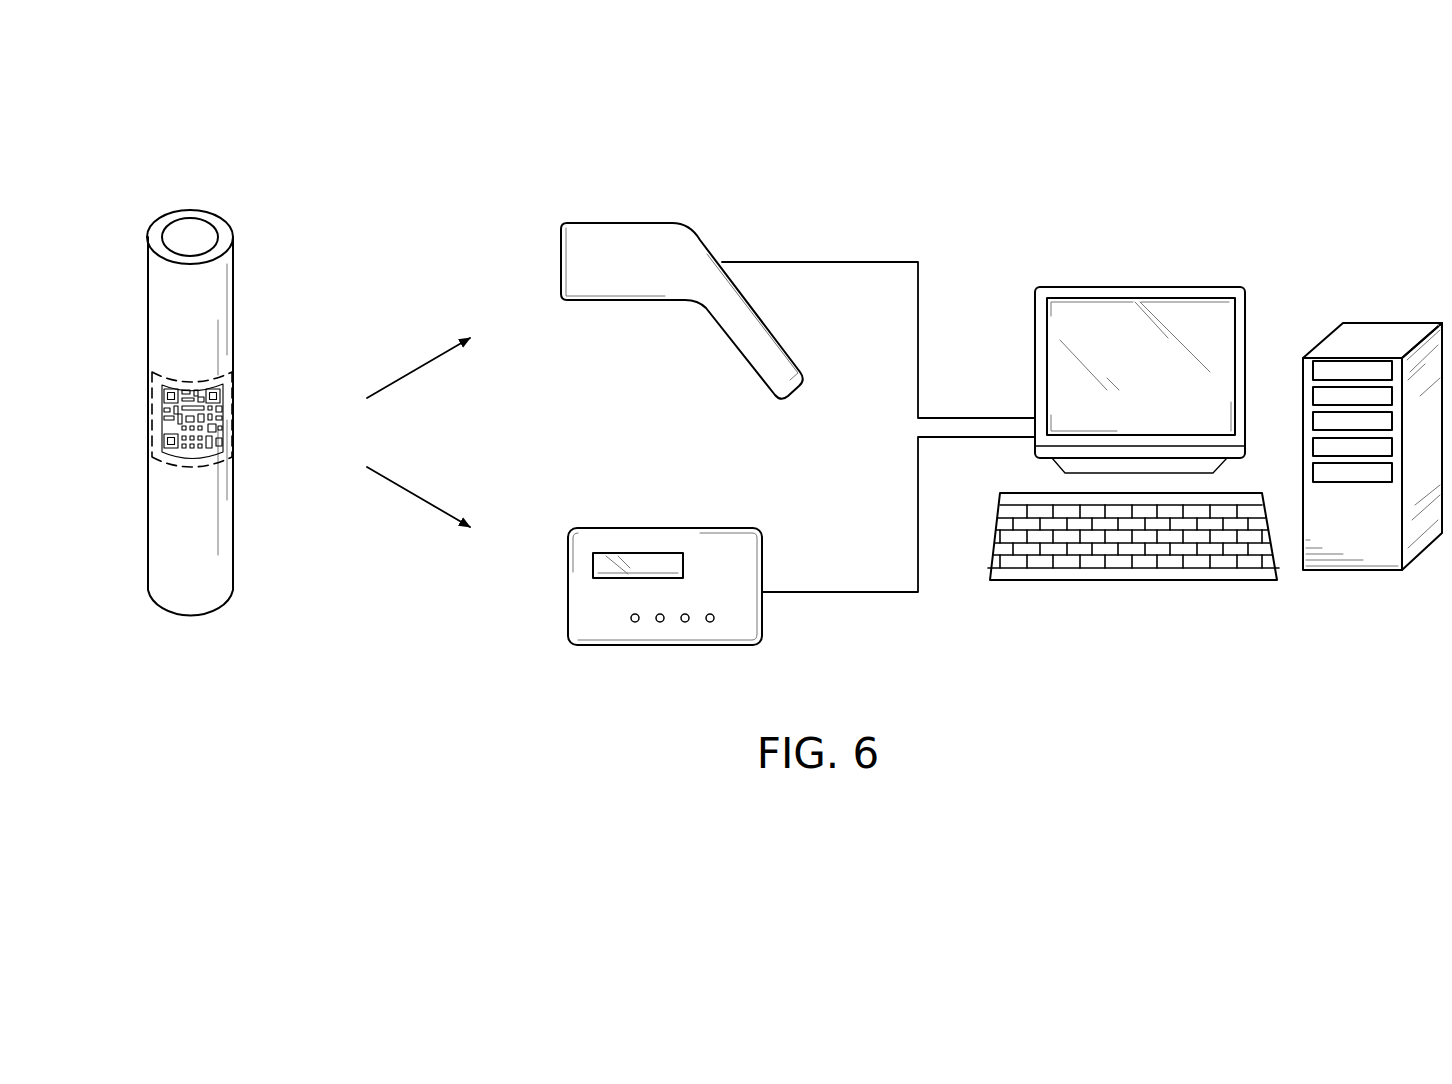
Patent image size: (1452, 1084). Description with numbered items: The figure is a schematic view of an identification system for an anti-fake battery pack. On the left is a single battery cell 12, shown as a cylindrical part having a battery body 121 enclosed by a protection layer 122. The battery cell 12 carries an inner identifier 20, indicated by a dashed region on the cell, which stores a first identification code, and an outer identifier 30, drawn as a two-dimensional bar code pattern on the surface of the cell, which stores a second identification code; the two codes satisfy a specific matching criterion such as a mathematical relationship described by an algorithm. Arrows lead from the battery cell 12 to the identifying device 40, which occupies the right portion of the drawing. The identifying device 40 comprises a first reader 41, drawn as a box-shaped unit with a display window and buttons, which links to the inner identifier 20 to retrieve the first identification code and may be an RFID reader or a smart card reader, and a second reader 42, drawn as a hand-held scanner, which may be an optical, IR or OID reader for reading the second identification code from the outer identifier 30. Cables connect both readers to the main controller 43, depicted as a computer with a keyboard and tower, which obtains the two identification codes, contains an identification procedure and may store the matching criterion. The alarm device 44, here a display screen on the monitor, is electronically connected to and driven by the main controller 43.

The battery cell 12 is at (212, 372).
The battery body 121 is at (213, 236).
The protection layer 122 is at (227, 300).
The inner identifier 20 is at (166, 380).
The outer identifier 30 is at (235, 411).
The identifying device 40 is at (994, 413).
The first reader 41 is at (605, 638).
The second reader 42 is at (633, 228).
The main controller 43 is at (1153, 355).
The alarm device 44 is at (1107, 322).